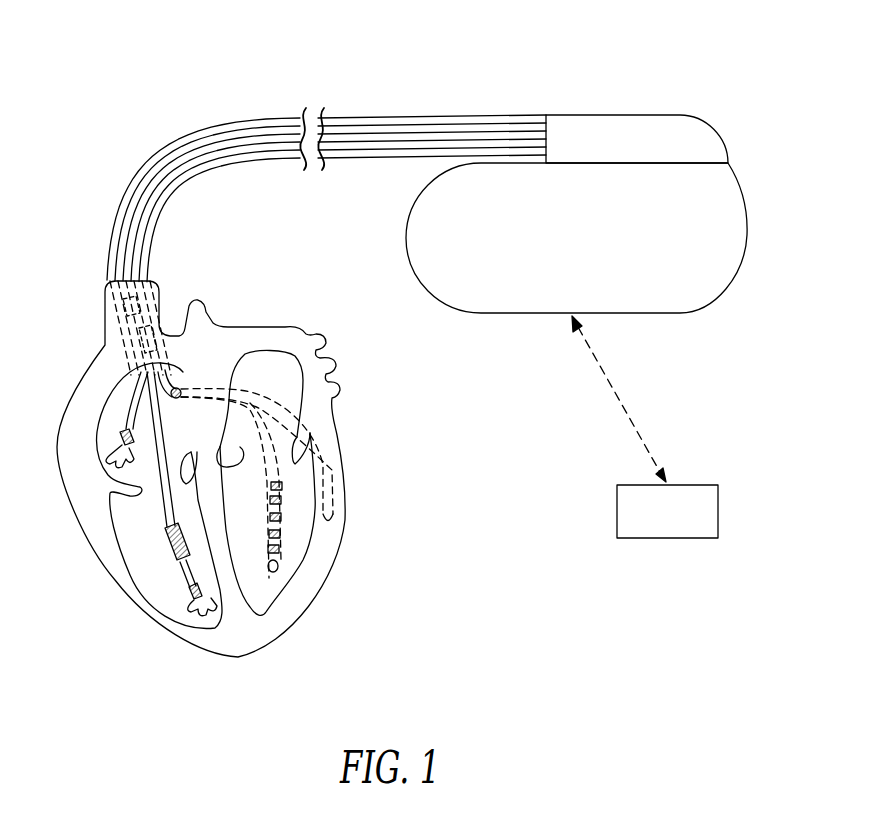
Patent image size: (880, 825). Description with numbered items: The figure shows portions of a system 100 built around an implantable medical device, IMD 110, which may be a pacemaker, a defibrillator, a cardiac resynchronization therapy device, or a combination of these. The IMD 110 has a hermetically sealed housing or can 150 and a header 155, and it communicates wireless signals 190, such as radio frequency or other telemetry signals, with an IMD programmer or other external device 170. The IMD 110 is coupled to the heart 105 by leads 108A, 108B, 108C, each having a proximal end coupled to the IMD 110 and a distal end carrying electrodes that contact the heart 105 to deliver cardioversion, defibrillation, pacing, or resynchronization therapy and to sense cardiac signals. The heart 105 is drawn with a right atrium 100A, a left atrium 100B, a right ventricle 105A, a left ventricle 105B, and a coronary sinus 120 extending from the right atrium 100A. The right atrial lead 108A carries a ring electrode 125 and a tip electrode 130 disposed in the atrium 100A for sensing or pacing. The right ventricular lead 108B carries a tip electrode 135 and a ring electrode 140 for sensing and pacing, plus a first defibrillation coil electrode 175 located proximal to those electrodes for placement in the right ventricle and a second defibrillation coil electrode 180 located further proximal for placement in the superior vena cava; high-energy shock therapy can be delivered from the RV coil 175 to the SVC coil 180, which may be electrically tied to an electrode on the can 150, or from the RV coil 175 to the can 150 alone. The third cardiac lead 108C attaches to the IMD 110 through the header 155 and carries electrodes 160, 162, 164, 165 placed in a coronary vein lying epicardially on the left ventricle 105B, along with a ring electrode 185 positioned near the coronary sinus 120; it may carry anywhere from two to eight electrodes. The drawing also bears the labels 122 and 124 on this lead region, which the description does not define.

The system 100 is at (97, 58).
The right atrium 100A is at (140, 481).
The left atrium 100B is at (267, 365).
The heart 105 is at (340, 453).
The right ventricle 105A is at (142, 515).
The left ventricle 105B is at (273, 590).
The right atrial lead 108A is at (238, 128).
The right ventricular lead 108B is at (188, 160).
The third cardiac lead 108C is at (205, 182).
The implantable medical device 110 is at (636, 104).
The coronary sinus 120 is at (271, 455).
The electrode 122 is at (285, 481).
The coronary sinus lead branch 124 is at (313, 421).
The ring electrode 125 is at (123, 432).
The tip electrode 130 is at (138, 465).
The tip electrode 135 is at (147, 532).
The ring electrode 140 is at (190, 595).
The IMD can 150 is at (747, 224).
The header 155 is at (710, 126).
The electrode 160 is at (279, 534).
The electrode 162 is at (281, 517).
The electrode 164 is at (281, 499).
The electrode 165 is at (279, 560).
The external device 170 is at (719, 513).
The first defibrillation coil electrode 175 is at (173, 550).
The second defibrillation coil electrode 180 is at (123, 328).
The ring electrode 185 is at (167, 370).
The wireless signals 190 is at (620, 397).